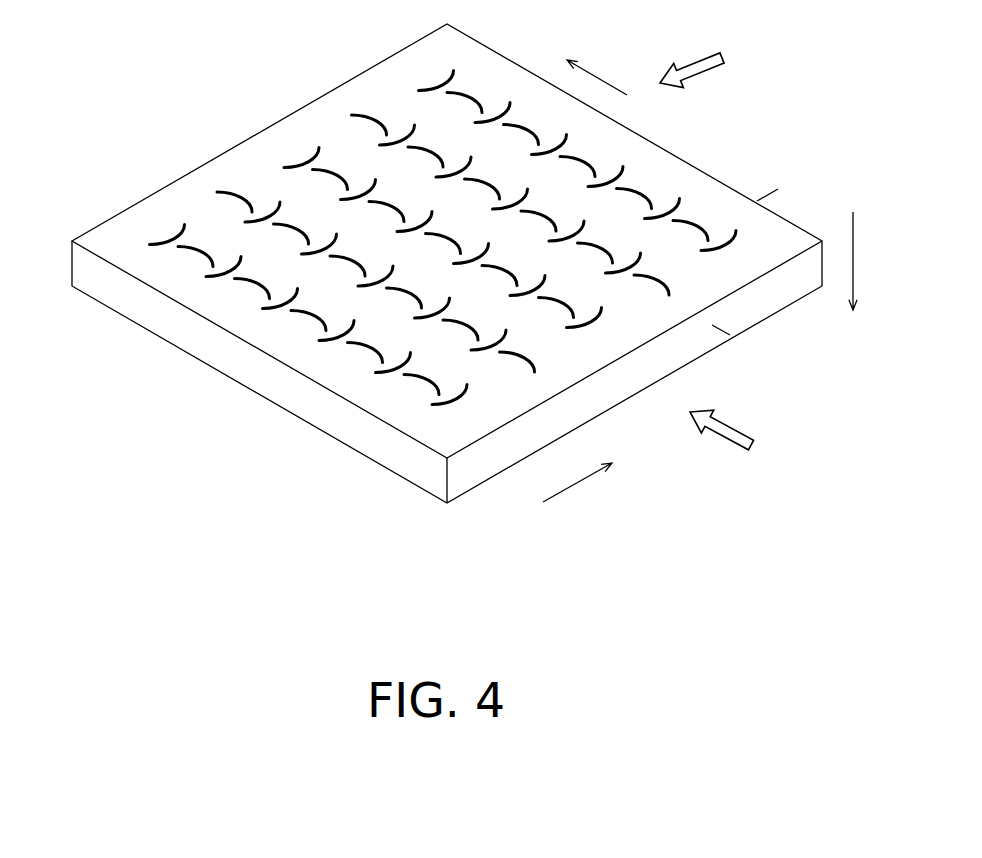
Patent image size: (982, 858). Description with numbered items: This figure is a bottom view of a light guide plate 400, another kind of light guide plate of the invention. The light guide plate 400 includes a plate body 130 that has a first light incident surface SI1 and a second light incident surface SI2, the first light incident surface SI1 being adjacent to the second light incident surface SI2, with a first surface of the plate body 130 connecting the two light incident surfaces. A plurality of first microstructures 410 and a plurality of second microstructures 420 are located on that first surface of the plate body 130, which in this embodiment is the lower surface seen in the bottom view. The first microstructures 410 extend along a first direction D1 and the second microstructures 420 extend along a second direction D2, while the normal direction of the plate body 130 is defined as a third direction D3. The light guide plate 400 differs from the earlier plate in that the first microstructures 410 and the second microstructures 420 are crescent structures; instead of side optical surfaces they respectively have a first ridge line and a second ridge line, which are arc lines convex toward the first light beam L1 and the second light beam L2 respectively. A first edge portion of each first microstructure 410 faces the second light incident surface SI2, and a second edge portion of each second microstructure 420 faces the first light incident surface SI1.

The light guide plate 400 is at (427, 309).
The plate body 130 is at (128, 298).
The first microstructure 410 is at (422, 380).
The second microstructure 420 is at (437, 85).
The first light incident surface SI1 is at (760, 191).
The second light incident surface SI2 is at (722, 329).
The first direction D1 is at (597, 70).
The second direction D2 is at (577, 478).
The third direction D3 is at (870, 261).
The first light beam L1 is at (702, 68).
The second light beam L2 is at (751, 447).